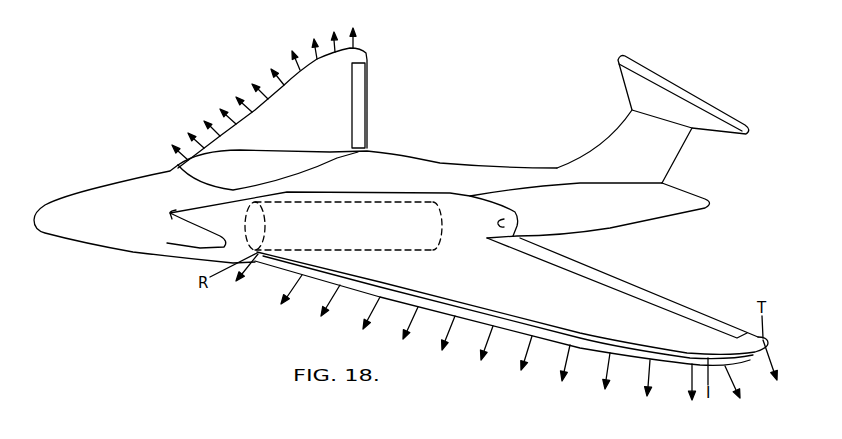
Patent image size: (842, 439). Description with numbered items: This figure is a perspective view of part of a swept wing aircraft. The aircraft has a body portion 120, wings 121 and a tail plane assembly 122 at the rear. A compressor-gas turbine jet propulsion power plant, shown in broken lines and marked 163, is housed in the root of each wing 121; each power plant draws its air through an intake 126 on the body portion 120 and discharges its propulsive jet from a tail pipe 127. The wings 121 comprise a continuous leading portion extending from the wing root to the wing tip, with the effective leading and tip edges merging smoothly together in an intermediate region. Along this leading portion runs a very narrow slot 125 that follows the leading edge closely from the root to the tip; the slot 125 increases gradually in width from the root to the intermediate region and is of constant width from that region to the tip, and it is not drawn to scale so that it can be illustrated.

The aircraft fuselage 120 is at (528, 181).
The boundary layer suction slot 121 is at (332, 108).
The tail unit (fin and tailplane) 122 is at (627, 132).
The wing leading edge 125 is at (637, 348).
The air intake 126 is at (197, 238).
The wing root fairing 127 is at (517, 215).
The engine / compressor unit 163 is at (415, 200).